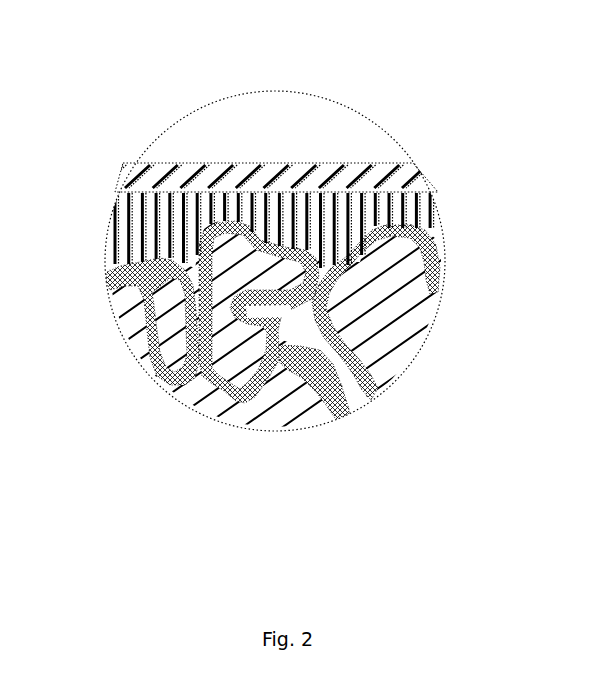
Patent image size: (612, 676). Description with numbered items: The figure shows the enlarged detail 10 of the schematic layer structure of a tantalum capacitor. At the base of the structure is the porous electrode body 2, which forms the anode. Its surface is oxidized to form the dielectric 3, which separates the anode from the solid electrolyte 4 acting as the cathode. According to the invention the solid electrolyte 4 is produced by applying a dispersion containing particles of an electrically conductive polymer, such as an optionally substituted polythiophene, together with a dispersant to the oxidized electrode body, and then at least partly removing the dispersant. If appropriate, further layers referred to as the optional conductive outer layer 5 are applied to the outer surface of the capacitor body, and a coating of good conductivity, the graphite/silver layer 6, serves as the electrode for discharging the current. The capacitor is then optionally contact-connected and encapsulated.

The detail 10 is at (197, 109).
The porous electrode body 2 is at (212, 393).
The dielectric 3 is at (333, 400).
The solid electrolyte 4 is at (371, 398).
The optional conductive outer layer 5 is at (136, 226).
The graphite/silver layer 6 is at (408, 158).